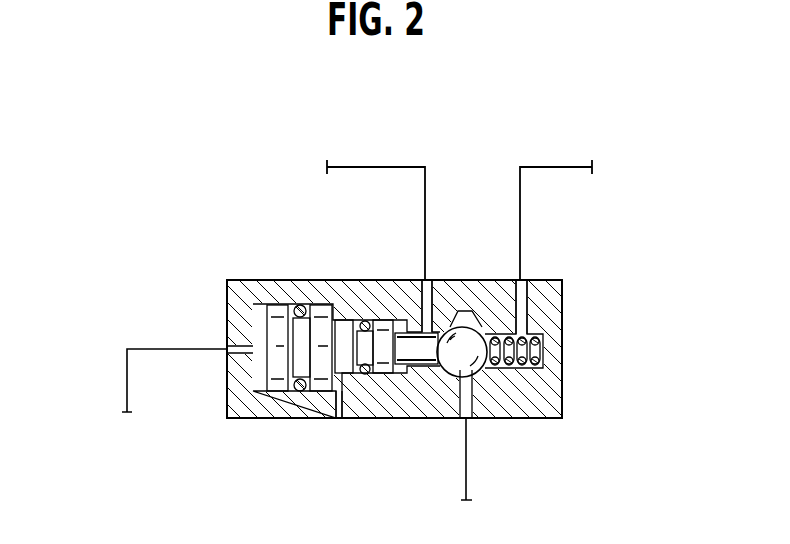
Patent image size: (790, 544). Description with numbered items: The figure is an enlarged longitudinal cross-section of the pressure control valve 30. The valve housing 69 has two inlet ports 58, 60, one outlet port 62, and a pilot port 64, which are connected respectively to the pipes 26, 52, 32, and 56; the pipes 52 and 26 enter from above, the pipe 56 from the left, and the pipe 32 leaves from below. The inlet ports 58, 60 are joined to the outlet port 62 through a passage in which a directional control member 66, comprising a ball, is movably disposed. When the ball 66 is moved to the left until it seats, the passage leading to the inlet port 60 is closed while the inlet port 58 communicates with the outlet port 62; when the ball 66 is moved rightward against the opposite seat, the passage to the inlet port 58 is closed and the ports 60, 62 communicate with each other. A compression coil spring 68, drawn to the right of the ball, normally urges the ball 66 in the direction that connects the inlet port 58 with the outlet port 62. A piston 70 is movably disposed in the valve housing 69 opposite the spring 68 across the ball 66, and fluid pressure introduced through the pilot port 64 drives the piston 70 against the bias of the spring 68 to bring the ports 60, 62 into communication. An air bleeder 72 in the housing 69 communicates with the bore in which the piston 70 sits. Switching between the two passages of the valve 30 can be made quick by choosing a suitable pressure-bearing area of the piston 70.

The pressure control valve 30 is at (242, 213).
The pipe 52 is at (360, 165).
The pipe 26 is at (553, 165).
The inlet port 60 is at (432, 280).
The directional control member 66 is at (466, 335).
The inlet port 58 is at (527, 283).
The piston 70 is at (287, 303).
The pilot port 64 is at (235, 353).
The pipe 56 is at (125, 387).
The air bleeder 72 is at (340, 420).
The outlet port 62 is at (460, 408).
The pipe 32 is at (467, 467).
The compression coil spring 68 is at (540, 353).
The valve housing 69 is at (557, 397).